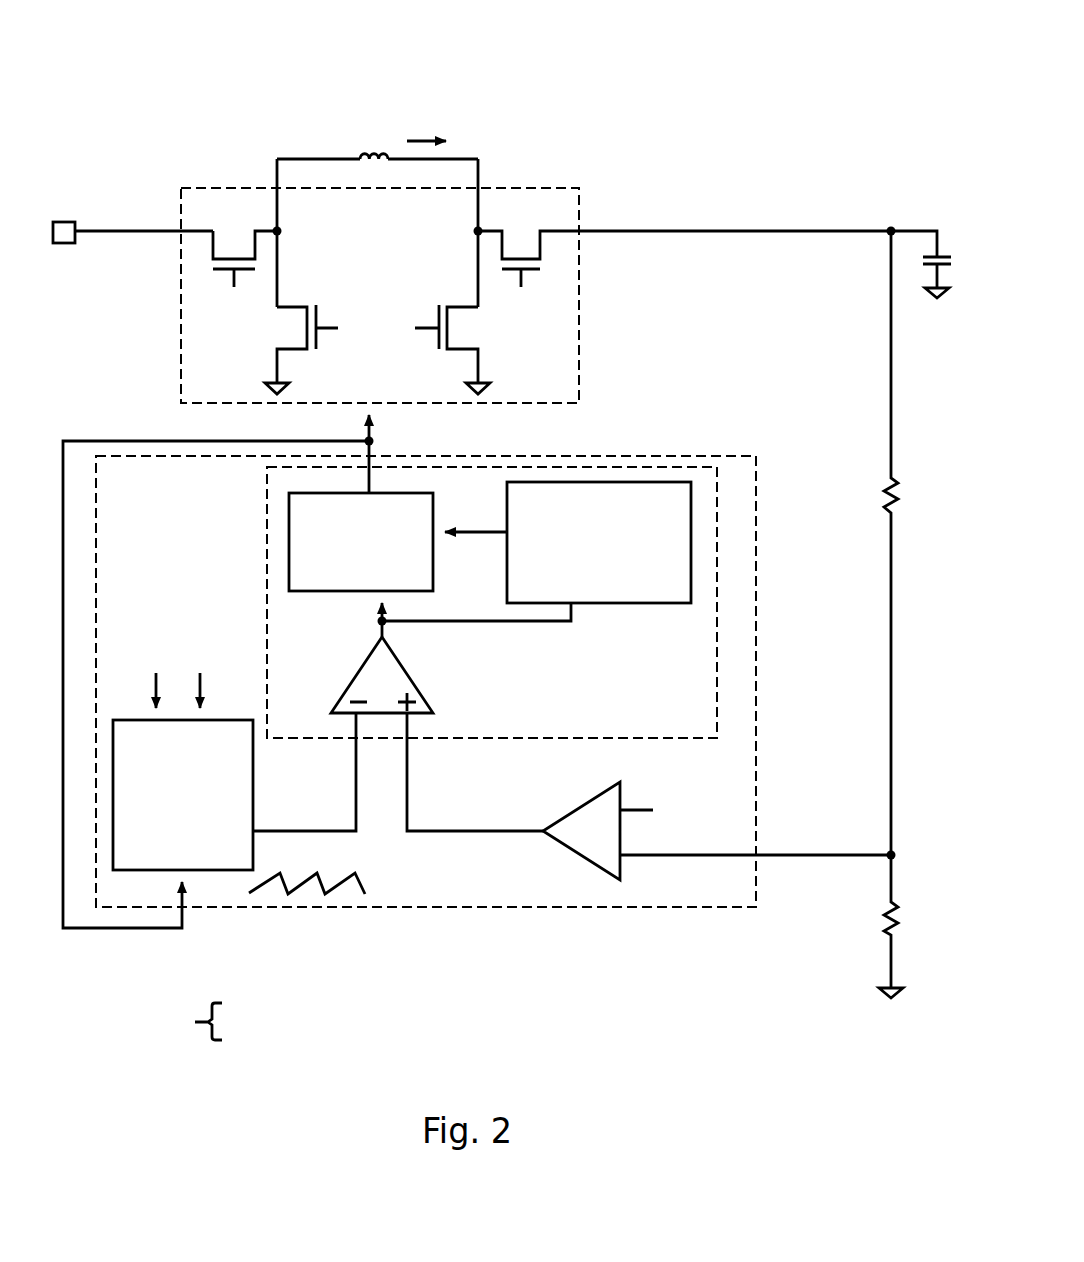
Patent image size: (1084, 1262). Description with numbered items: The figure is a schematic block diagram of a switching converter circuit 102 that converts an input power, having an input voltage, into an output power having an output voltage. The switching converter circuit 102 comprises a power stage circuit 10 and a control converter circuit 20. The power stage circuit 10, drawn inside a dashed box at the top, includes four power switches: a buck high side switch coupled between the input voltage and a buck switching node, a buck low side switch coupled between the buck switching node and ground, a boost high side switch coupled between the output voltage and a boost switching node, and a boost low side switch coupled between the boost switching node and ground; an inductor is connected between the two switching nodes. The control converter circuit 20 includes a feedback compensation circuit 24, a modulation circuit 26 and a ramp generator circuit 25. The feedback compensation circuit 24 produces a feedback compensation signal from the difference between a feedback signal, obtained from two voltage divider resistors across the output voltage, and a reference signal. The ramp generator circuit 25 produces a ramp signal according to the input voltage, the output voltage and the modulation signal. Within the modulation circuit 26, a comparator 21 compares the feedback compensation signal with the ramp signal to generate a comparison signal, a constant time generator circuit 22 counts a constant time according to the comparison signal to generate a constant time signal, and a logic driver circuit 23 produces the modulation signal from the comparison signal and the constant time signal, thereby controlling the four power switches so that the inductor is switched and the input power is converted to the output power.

The switching converter circuit 102 is at (213, 77).
The power stage circuit 10 is at (579, 322).
The control converter circuit 20 is at (143, 497).
The comparator 21 is at (423, 690).
The constant time generator circuit 22 is at (587, 592).
The logic driver circuit 23 is at (349, 579).
The feedback compensation circuit 24 is at (580, 803).
The ramp generator circuit 25 is at (171, 859).
The modulation circuit 26 is at (702, 721).